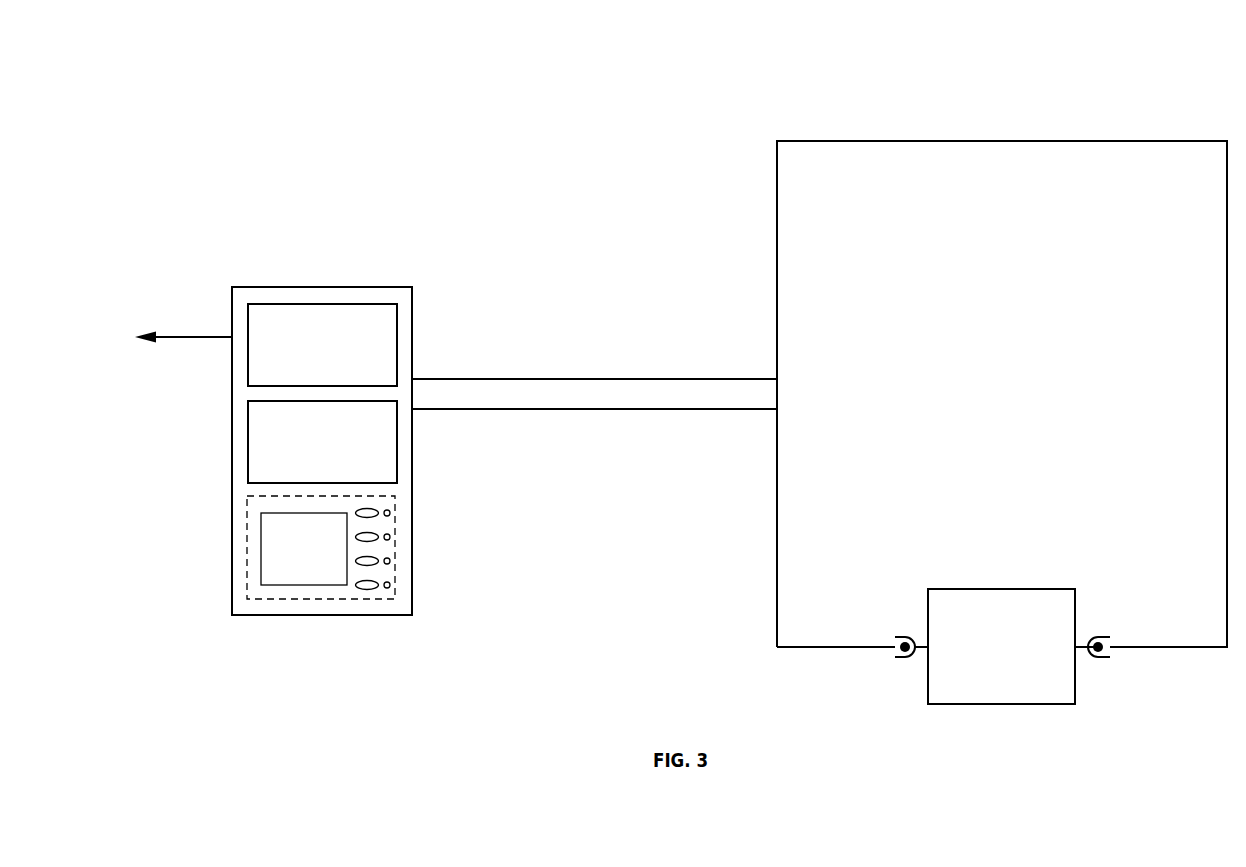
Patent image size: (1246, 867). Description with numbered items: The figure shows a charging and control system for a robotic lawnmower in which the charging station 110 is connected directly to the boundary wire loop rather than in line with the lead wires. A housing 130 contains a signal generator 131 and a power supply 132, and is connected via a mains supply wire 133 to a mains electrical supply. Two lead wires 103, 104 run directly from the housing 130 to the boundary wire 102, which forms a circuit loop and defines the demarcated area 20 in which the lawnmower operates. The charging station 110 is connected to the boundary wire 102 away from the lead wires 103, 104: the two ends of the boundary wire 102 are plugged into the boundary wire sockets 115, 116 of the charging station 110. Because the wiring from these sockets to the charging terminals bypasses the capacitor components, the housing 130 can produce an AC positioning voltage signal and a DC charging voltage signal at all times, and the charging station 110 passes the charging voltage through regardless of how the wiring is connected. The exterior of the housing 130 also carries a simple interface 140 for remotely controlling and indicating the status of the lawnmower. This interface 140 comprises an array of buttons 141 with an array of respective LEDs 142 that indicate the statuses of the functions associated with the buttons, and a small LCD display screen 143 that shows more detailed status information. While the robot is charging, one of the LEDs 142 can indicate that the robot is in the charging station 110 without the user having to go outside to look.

The demarcated area 20 is at (1007, 403).
The boundary wire 102 is at (1033, 141).
The lead wire 103 is at (592, 379).
The lead wire 104 is at (592, 409).
The charging station 110 is at (1017, 659).
The boundary wire socket 115 is at (904, 637).
The boundary wire socket 116 is at (1102, 636).
The housing 130 is at (330, 287).
The signal generator 131 is at (337, 355).
The power supply 132 is at (337, 453).
The mains supply wire 133 is at (187, 337).
The interface 140 is at (329, 602).
The buttons 141 is at (365, 593).
The LEDs 142 is at (388, 593).
The LCD display screen 143 is at (260, 554).